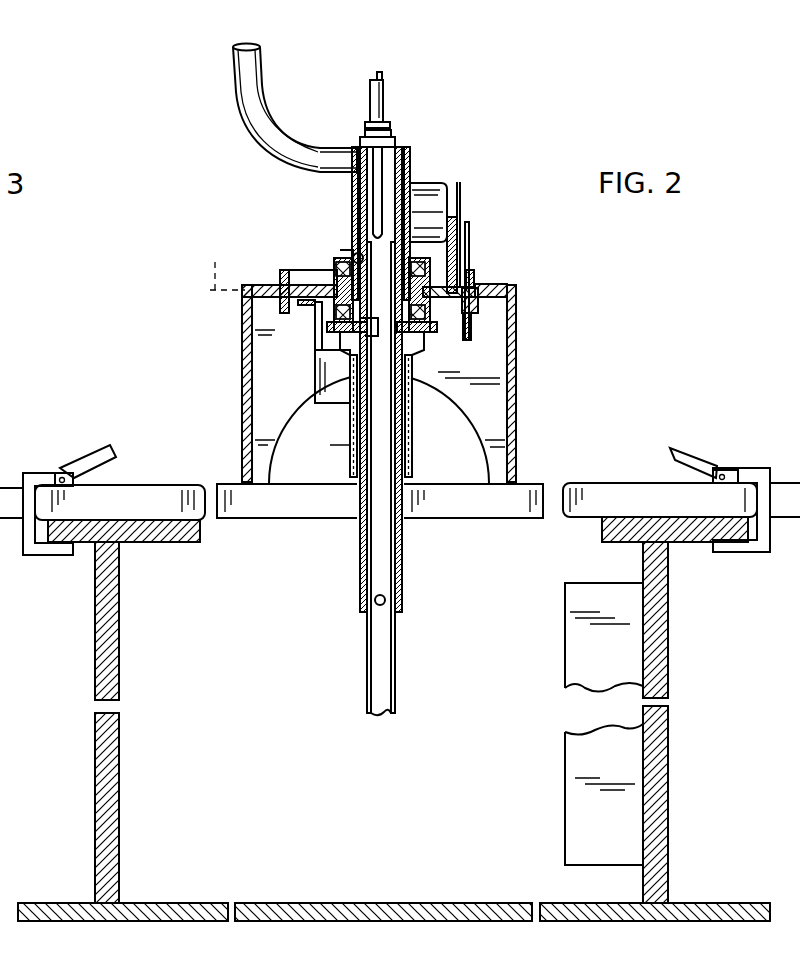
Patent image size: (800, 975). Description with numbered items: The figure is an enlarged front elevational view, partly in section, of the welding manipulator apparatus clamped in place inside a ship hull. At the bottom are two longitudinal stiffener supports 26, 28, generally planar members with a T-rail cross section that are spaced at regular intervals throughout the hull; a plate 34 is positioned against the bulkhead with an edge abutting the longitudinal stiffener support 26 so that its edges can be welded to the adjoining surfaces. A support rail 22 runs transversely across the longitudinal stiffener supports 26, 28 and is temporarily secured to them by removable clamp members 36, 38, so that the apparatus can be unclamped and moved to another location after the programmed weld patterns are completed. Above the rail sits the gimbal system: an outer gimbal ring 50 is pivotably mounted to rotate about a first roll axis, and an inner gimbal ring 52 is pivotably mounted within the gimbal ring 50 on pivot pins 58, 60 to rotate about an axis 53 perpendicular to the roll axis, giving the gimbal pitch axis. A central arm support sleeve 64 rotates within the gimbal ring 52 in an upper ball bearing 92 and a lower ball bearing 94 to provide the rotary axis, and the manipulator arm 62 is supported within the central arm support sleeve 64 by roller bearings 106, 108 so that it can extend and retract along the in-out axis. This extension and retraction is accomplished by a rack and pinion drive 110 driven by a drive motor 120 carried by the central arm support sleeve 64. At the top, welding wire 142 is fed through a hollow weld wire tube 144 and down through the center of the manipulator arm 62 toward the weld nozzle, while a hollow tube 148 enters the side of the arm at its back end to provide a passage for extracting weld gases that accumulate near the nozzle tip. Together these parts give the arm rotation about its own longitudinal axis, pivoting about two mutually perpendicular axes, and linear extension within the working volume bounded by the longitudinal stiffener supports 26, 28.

The support rail 22 is at (577, 517).
The longitudinal stiffener support 26 is at (668, 678).
The longitudinal stiffener support 28 is at (120, 703).
The plate 34 is at (578, 753).
The removable clamp member 36 is at (727, 466).
The removable clamp member 38 is at (58, 468).
The gimbal ring 50 is at (285, 270).
The gimbal ring 52 is at (455, 300).
The axis 53 is at (215, 262).
The pivot pin 58 is at (306, 302).
The pivot pin 60 is at (476, 282).
The manipulator arm 62 is at (395, 682).
The central arm support sleeve 64 is at (402, 576).
The upper ball bearing 92 is at (430, 275).
The lower ball bearing 94 is at (314, 318).
The roller bearing 106 is at (352, 254).
The roller bearing 108 is at (368, 318).
The rack and pinion drive 110 is at (410, 177).
The drive motor 120 is at (432, 187).
The welding wire 142 is at (384, 75).
The hollow weld wire tube 144 is at (386, 102).
The hollow tube 148 is at (234, 110).